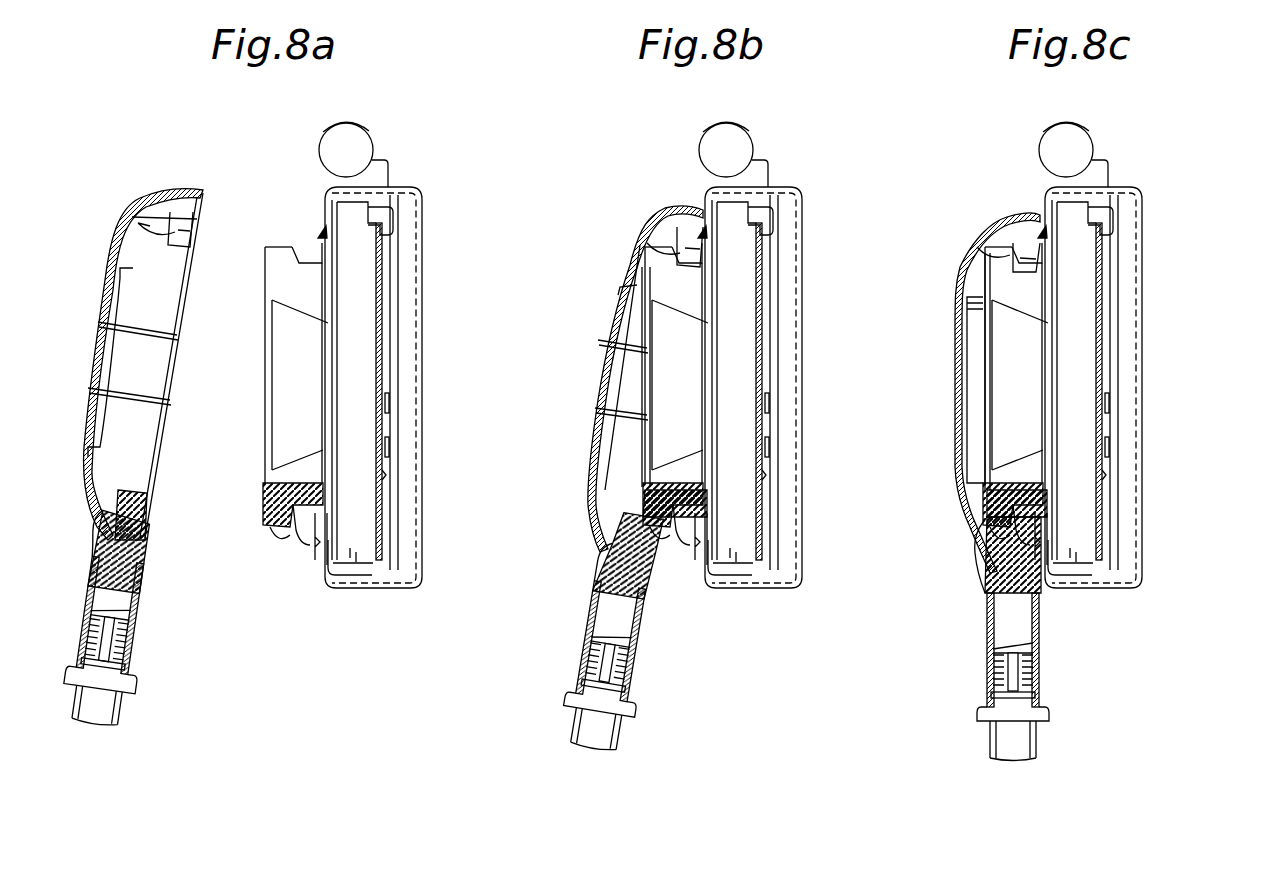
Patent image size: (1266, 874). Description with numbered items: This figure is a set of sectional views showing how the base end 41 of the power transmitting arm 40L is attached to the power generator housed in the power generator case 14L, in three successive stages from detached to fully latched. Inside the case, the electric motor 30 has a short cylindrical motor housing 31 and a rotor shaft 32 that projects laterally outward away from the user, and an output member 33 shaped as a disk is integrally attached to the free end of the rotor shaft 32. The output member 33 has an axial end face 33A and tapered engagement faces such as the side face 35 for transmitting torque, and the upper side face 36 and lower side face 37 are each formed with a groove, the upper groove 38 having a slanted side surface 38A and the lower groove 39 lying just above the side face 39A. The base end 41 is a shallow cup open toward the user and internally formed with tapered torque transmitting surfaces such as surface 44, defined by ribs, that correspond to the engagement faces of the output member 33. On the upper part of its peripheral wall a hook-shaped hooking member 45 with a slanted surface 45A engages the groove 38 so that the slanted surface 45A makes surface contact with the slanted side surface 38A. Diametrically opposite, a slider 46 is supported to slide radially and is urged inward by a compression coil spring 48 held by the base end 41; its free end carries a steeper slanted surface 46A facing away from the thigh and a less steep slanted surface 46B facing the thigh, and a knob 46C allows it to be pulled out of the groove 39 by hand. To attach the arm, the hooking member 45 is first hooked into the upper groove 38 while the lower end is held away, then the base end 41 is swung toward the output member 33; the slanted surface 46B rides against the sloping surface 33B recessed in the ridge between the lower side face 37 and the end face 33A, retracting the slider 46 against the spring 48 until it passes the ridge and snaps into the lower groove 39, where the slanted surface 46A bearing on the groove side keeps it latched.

In FIG. 8A, the power generator case 14L is at (419, 437).
In FIG. 8B, the power generator case 14L is at (797, 447).
In FIG. 8C, the power generator case 14L is at (1157, 406).
In FIG. 8A, the electric motor 30 is at (356, 269).
In FIG. 8B, the electric motor 30 is at (733, 282).
In FIG. 8C, the electric motor 30 is at (1078, 285).
In FIG. 8A, the motor housing 31 is at (350, 487).
In FIG. 8B, the motor housing 31 is at (733, 488).
In FIG. 8C, the motor housing 31 is at (1073, 440).
In FIG. 8A, the rotor shaft 32 is at (332, 370).
In FIG. 8B, the rotor shaft 32 is at (707, 380).
In FIG. 8C, the rotor shaft 32 is at (1053, 403).
In FIG. 8A, the output member 33 is at (259, 449).
In FIG. 8B, the output member 33 is at (637, 440).
In FIG. 8C, the output member 33 is at (980, 399).
In FIG. 8A, the axial end face 33A is at (300, 338).
In FIG. 8B, the axial end face 33A is at (620, 340).
In FIG. 8C, the axial end face 33A is at (980, 370).
In FIG. 8A, the sloping surface 33B is at (263, 530).
In FIG. 8B, the sloping surface 33B is at (630, 533).
In FIG. 8C, the sloping surface 33B is at (990, 530).
In FIG. 8A, the engagement face 35 is at (322, 338).
In FIG. 8B, the engagement face 35 is at (700, 358).
In FIG. 8C, the engagement face 35 is at (1040, 347).
In FIG. 8A, the upper side face 36 is at (283, 237).
In FIG. 8B, the upper side face 36 is at (643, 237).
In FIG. 8C, the upper side face 36 is at (983, 240).
In FIG. 8A, the lower side face 37 is at (283, 537).
In FIG. 8B, the lower side face 37 is at (603, 553).
In FIG. 8C, the lower side face 37 is at (980, 540).
In FIG. 8A, the groove 38 is at (310, 257).
In FIG. 8B, the groove 38 is at (687, 243).
In FIG. 8C, the groove 38 is at (1030, 250).
In FIG. 8A, the slanted side surface 38A is at (302, 247).
In FIG. 8B, the slanted side surface 38A is at (660, 237).
In FIG. 8C, the slanted side surface 38A is at (1025, 240).
In FIG. 8A, the groove 39 is at (303, 517).
In FIG. 8B, the groove 39 is at (698, 527).
In FIG. 8C, the groove 39 is at (1040, 507).
In FIG. 8A, the side face 39A is at (293, 527).
In FIG. 8B, the side face 39A is at (670, 545).
In FIG. 8C, the side face 39A is at (1033, 537).
In FIG. 8A, the power transmitting arm 40L is at (118, 720).
In FIG. 8B, the power transmitting arm 40L is at (570, 724).
In FIG. 8C, the power transmitting arm 40L is at (983, 747).
In FIG. 8A, the base end 41 is at (92, 393).
In FIG. 8B, the base end 41 is at (610, 303).
In FIG. 8C, the base end 41 is at (957, 327).
In FIG. 8A, the tapered torque transmitting surface 44 is at (140, 397).
In FIG. 8B, the tapered torque transmitting surface 44 is at (627, 360).
In FIG. 8C, the tapered torque transmitting surface 44 is at (975, 306).
In FIG. 8A, the hooking member 45 is at (172, 226).
In FIG. 8B, the hooking member 45 is at (680, 232).
In FIG. 8C, the hooking member 45 is at (1015, 245).
In FIG. 8A, the slanted surface 45A is at (137, 225).
In FIG. 8B, the slanted surface 45A is at (673, 263).
In FIG. 8C, the slanted surface 45A is at (1013, 260).
In FIG. 8A, the slider 46 is at (118, 547).
In FIG. 8B, the slider 46 is at (620, 570).
In FIG. 8C, the slider 46 is at (1013, 573).
In FIG. 8A, the slanted surface 46A is at (118, 495).
In FIG. 8B, the slanted surface 46A is at (607, 520).
In FIG. 8C, the slanted surface 46A is at (997, 552).
In FIG. 8A, the slanted surface 46B is at (147, 497).
In FIG. 8B, the slanted surface 46B is at (647, 500).
In FIG. 8C, the slanted surface 46B is at (1043, 460).
In FIG. 8A, the knob 46C is at (130, 693).
In FIG. 8B, the knob 46C is at (637, 712).
In FIG. 8C, the knob 46C is at (1040, 703).
In FIG. 8A, the compression coil spring 48 is at (113, 623).
In FIG. 8B, the compression coil spring 48 is at (617, 640).
In FIG. 8C, the compression coil spring 48 is at (1013, 647).